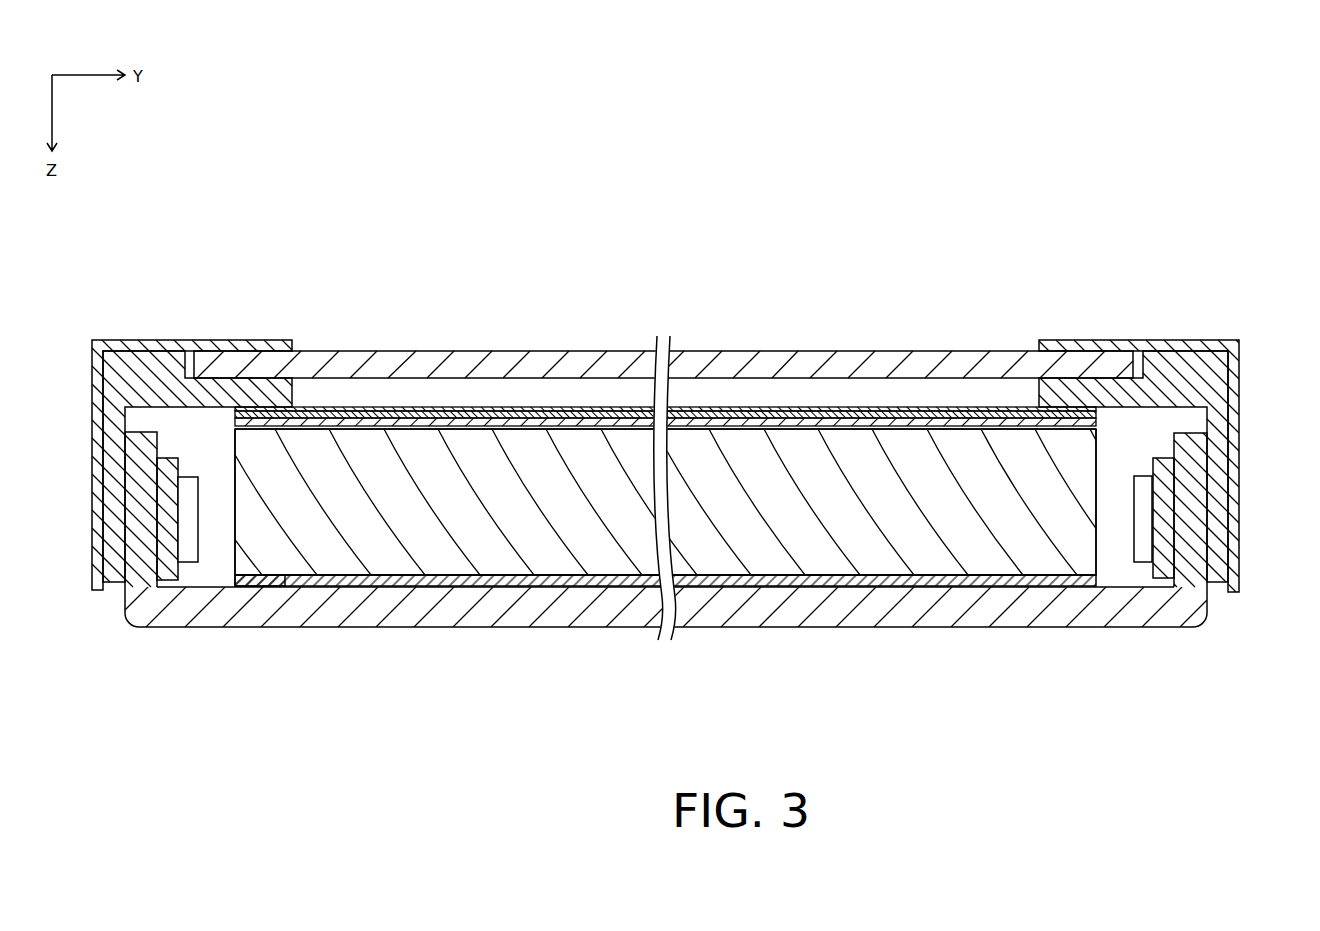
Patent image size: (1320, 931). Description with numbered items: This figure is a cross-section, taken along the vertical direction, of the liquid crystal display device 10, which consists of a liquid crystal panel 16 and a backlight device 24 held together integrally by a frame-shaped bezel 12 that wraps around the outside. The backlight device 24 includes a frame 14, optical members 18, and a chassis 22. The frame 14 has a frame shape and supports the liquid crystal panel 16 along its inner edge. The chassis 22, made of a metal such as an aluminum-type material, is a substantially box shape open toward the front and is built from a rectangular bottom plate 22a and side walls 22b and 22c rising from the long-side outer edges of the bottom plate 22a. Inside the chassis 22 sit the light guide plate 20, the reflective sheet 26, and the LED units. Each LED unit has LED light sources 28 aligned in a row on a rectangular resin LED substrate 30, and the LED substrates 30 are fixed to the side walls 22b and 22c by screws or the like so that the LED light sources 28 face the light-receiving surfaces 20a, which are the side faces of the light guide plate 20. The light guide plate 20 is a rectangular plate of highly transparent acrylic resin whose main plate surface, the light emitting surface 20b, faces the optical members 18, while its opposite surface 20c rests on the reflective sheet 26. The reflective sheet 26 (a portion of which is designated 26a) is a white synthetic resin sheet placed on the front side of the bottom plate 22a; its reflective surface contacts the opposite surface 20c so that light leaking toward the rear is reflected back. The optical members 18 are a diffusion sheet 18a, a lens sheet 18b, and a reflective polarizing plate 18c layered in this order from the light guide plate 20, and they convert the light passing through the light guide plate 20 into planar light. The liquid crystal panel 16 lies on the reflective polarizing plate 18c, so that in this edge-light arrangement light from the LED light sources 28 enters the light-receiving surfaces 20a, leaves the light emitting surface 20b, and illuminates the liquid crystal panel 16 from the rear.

The liquid crystal display device 10 is at (286, 288).
The bezel 12 is at (122, 345).
The frame 14 is at (154, 358).
The liquid crystal panel 16 is at (240, 353).
The optical members 18 is at (665, 340).
The diffusion sheet 18a is at (482, 411).
The lens sheet 18b is at (526, 413).
The reflective polarizing plate 18c is at (485, 302).
The light guide plate 20 is at (676, 493).
The light-receiving surface 20a is at (235, 540).
The light emitting surface 20b is at (890, 427).
The opposite surface 20c is at (932, 577).
The chassis 22 is at (669, 575).
The bottom plate 22a is at (518, 582).
The side wall 22b is at (133, 510).
The side wall 22c is at (1190, 510).
The backlight device 24 is at (456, 682).
The reflective sheet 26 is at (665, 640).
The end portion of reflection sheet 26a is at (267, 571).
The LED light source 28 is at (187, 477).
The LED substrate 30 is at (167, 553).